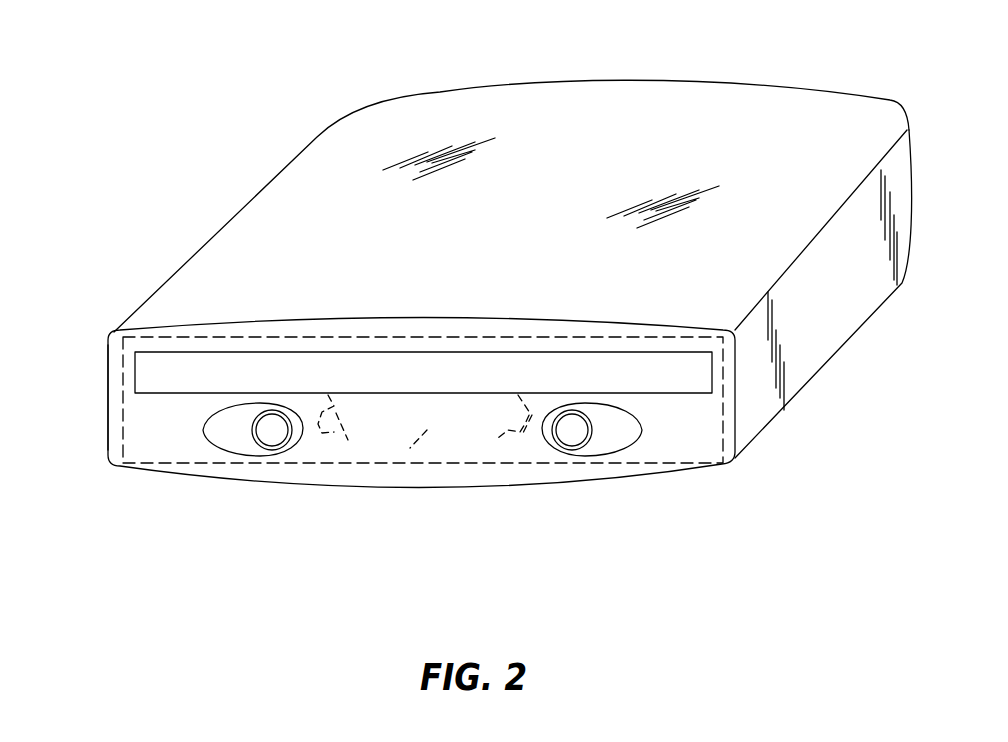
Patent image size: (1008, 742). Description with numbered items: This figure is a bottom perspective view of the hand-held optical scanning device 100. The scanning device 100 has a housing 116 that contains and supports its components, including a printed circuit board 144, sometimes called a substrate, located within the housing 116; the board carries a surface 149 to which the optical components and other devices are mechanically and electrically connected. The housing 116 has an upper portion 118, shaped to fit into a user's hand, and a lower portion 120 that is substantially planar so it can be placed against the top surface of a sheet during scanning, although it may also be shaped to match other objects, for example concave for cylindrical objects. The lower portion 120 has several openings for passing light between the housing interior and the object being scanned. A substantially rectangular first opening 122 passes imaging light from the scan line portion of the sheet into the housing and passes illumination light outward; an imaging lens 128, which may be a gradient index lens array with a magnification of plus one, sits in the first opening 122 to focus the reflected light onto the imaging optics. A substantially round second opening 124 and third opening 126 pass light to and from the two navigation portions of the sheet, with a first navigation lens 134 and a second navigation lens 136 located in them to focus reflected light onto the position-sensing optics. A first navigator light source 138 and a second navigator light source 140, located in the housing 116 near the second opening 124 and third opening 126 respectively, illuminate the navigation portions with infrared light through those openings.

The scanning device 100 is at (470, 275).
The housing 116 is at (835, 320).
The upper portion 118 is at (773, 80).
The lower portion 120 is at (701, 433).
The first opening 122 is at (136, 371).
The second opening 124 is at (203, 430).
The third opening 126 is at (642, 430).
The imaging lens 128 is at (402, 368).
The first navigation lens 134 is at (254, 437).
The second navigation lens 136 is at (591, 437).
The first navigator light source 138 is at (322, 433).
The second navigator light source 140 is at (525, 433).
The printed circuit board 144 is at (121, 427).
The surface 149 is at (410, 448).